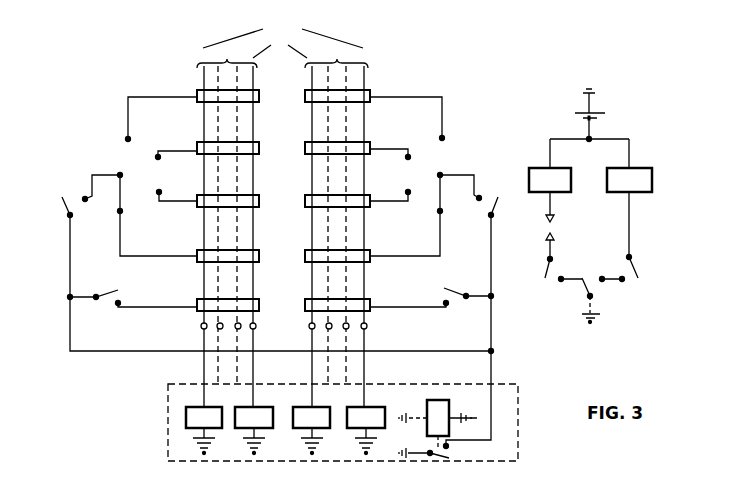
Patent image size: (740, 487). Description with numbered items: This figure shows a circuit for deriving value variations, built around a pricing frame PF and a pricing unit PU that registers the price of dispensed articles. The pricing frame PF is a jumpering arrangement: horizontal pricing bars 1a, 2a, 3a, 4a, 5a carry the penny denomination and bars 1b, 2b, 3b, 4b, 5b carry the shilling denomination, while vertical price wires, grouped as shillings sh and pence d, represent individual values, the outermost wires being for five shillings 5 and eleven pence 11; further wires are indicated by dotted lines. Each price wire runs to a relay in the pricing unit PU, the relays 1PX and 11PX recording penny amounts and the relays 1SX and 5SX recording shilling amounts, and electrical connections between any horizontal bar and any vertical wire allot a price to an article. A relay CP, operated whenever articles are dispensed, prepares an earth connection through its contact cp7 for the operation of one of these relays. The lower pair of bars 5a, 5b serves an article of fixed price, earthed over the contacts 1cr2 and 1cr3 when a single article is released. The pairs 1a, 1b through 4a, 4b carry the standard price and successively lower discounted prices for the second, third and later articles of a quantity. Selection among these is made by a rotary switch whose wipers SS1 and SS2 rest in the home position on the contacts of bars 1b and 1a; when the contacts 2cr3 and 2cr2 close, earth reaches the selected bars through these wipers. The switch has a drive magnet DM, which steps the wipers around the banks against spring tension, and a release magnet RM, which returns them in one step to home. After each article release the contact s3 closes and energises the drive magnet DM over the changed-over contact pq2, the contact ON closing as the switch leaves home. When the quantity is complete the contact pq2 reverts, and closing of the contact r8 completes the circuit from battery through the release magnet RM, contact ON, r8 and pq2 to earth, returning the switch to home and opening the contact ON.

The pricing frame PF is at (283, 35).
The shilling price wire group sh is at (234, 55).
The penny price wire group d is at (328, 55).
The five-shilling price wire 5 is at (226, 236).
The eleven-pence price wire 11 is at (336, 236).
The pricing bar 4b is at (193, 116).
The pricing bar 3b is at (208, 157).
The pricing bar 2b is at (208, 207).
The pricing bar 1b is at (189, 227).
The pricing bar 5b is at (220, 314).
The pricing bar 4a is at (375, 115).
The pricing bar 3a is at (358, 157).
The pricing bar 2a is at (358, 207).
The pricing bar 1a is at (374, 227).
The pricing bar 5a is at (347, 314).
The rotary switch wiper SS1 is at (102, 179).
The rotary switch wiper SS2 is at (459, 178).
The relay contact 2cr3 is at (276, 274).
The relay contact 2cr2 is at (471, 323).
The relay contact 1cr3 is at (133, 298).
The relay contact 1cr2 is at (432, 297).
The pricing unit PU is at (327, 422).
The shilling relay 5SX is at (197, 422).
The shilling relay 1SX is at (249, 422).
The penny relay 11PX is at (305, 422).
The penny relay 1PX is at (362, 422).
The relay CP is at (438, 418).
The relay contact cp7 is at (437, 455).
The release magnet RM is at (571, 140).
The drive magnet DM is at (633, 198).
The rotary switch contact ON is at (563, 225).
The relay contact r8 is at (567, 277).
The relay contact s3 is at (619, 268).
The relay contact pq2 is at (601, 304).